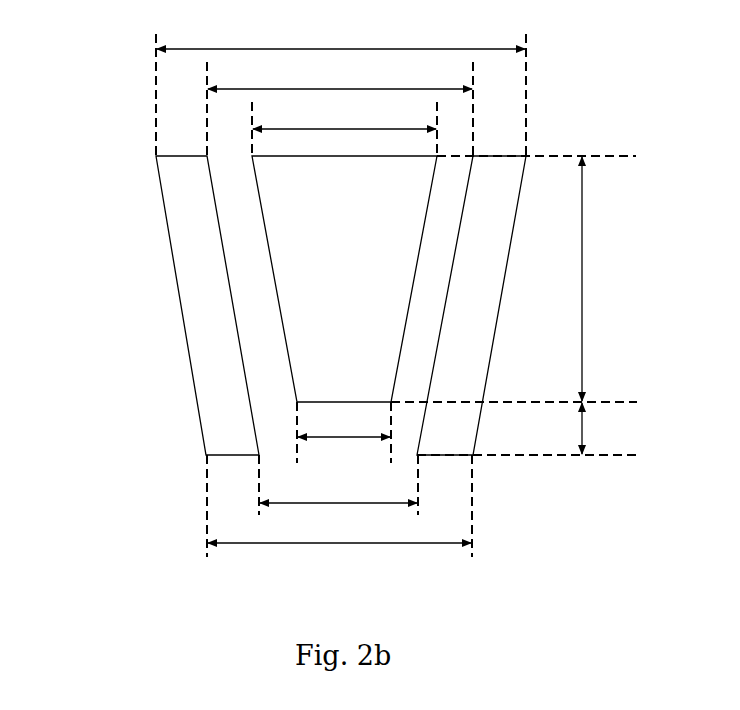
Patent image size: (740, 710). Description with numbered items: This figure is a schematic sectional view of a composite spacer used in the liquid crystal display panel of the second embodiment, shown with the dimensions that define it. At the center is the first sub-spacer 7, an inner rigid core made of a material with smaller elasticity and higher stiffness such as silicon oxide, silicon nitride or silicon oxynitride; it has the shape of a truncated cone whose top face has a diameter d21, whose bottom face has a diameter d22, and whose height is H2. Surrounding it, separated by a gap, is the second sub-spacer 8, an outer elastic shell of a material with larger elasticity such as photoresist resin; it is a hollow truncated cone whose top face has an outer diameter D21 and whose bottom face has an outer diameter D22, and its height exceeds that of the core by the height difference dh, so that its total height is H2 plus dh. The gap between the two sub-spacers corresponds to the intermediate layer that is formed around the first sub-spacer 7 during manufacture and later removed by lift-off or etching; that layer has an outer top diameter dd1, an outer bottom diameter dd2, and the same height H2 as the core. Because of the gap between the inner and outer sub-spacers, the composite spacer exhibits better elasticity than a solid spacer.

The first sub-spacer 7 is at (235, 252).
The second sub-spacer 8 is at (279, 305).
The outer diameter of bottom face of second sub-spacer D22 is at (341, 84).
The outer diameter of bottom face of intermediate layer dd2 is at (340, 105).
The diameter of bottom face of first sub-spacer d22 is at (344, 125).
The diameter of top face of first sub-spacer d21 is at (344, 444).
The outer diameter of top face of intermediate layer dd1 is at (338, 494).
The outer diameter of top face of second sub-spacer D21 is at (339, 519).
The height of first sub-spacer H2 is at (523, 279).
The height difference dh is at (536, 429).